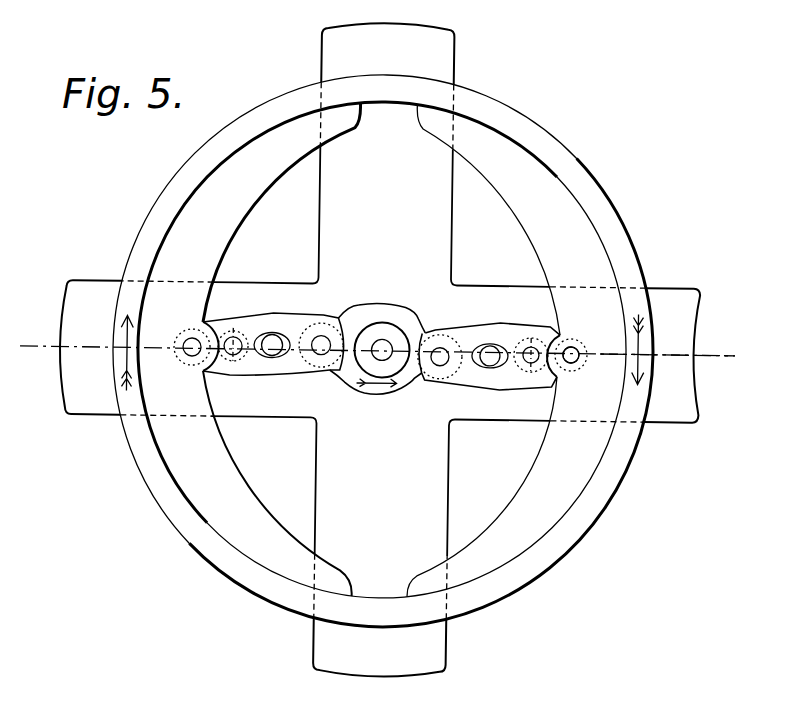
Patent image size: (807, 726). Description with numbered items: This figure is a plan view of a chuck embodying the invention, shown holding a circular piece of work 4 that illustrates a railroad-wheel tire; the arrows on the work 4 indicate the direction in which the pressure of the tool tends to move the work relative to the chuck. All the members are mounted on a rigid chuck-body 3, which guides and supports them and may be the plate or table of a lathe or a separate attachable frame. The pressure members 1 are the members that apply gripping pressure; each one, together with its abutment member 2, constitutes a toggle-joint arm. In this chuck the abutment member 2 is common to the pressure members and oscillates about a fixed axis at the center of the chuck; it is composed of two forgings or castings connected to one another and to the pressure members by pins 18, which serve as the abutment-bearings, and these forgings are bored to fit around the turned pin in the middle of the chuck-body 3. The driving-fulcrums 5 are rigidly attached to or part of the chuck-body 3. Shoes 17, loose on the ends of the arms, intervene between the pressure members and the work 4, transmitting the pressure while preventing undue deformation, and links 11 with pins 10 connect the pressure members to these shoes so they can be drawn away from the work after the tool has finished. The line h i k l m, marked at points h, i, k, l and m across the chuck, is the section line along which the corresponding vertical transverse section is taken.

The pressure member 1 is at (385, 352).
The abutment member 2 is at (377, 349).
The chuck-body 3 is at (380, 350).
The work 4 is at (383, 350).
The driving-fulcrum 5 is at (491, 366).
The pin 10 is at (556, 383).
The link 11 is at (528, 340).
The shoe 17 is at (381, 350).
The pin 18 is at (367, 356).
The section-line point h is at (368, 344).
The section-line point i is at (313, 339).
The section-line point k is at (444, 371).
The section-line point l is at (576, 345).
The section-line point m is at (679, 356).